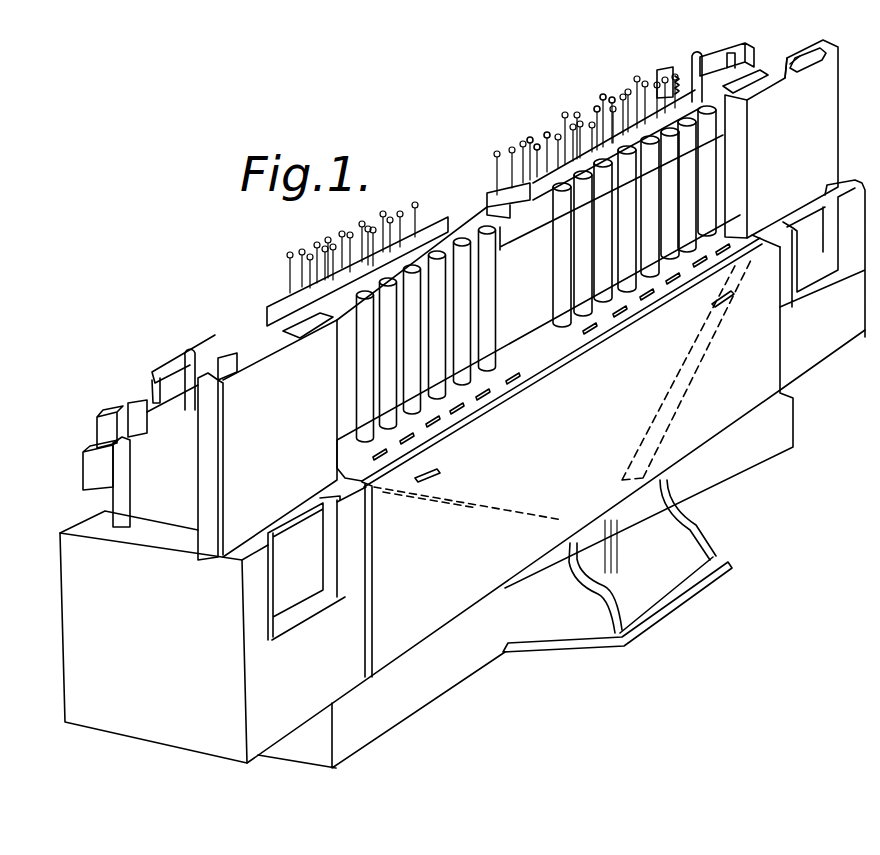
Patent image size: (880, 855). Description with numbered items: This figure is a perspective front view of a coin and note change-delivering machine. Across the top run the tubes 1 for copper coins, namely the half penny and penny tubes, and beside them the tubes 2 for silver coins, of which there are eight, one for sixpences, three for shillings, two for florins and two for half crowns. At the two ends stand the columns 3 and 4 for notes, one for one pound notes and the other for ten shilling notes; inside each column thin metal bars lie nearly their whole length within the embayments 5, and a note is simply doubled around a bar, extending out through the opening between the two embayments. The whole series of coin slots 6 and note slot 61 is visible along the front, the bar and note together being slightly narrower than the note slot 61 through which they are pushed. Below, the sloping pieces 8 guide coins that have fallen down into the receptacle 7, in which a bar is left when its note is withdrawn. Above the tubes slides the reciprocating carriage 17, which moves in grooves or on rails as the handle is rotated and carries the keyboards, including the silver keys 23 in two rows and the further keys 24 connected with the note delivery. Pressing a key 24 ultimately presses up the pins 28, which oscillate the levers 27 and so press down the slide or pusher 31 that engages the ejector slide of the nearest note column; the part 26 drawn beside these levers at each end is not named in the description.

The tubes for copper coins 1 is at (441, 347).
The tubes for silver coins 2 is at (630, 220).
The column for notes 3 is at (267, 440).
The column for notes 4 is at (781, 139).
The embayments 5 is at (300, 338).
The coin slots 6 is at (432, 424).
The note slot 61 is at (806, 236).
The receptacle 7 is at (617, 566).
The sloping pieces 8 is at (477, 510).
The carriage 17 is at (478, 217).
The keys 23 is at (548, 150).
The keys 24 is at (630, 96).
The upright 26 is at (186, 354).
The levers 27 is at (170, 368).
The pins 28 is at (221, 357).
The slide or pusher 31 is at (145, 405).